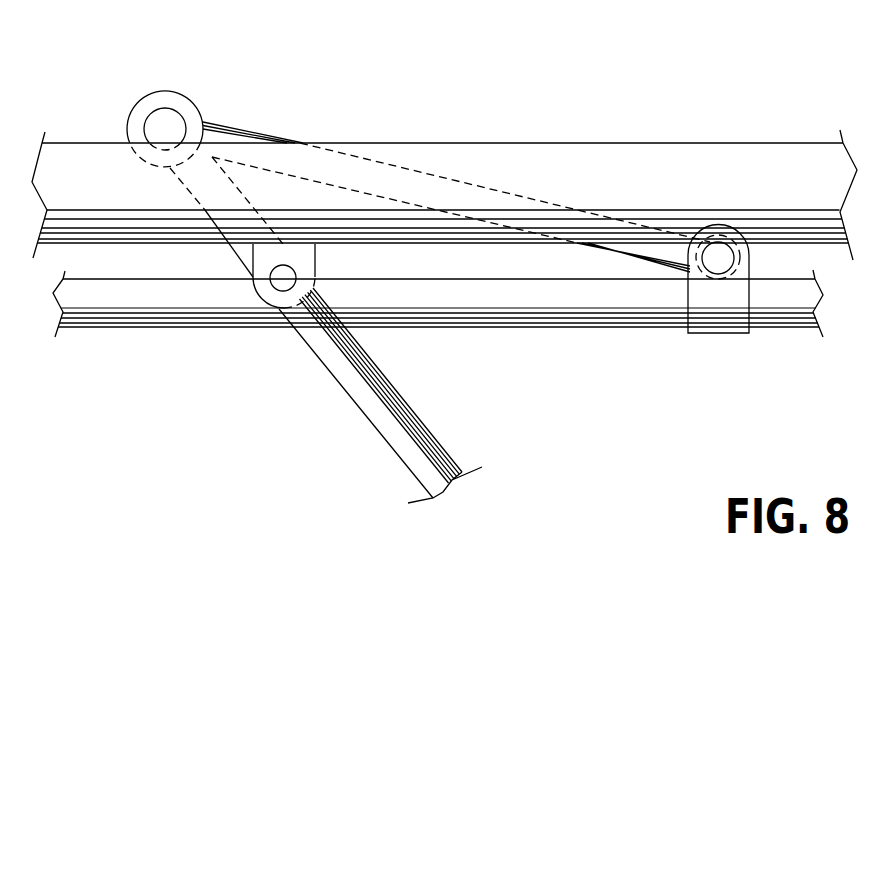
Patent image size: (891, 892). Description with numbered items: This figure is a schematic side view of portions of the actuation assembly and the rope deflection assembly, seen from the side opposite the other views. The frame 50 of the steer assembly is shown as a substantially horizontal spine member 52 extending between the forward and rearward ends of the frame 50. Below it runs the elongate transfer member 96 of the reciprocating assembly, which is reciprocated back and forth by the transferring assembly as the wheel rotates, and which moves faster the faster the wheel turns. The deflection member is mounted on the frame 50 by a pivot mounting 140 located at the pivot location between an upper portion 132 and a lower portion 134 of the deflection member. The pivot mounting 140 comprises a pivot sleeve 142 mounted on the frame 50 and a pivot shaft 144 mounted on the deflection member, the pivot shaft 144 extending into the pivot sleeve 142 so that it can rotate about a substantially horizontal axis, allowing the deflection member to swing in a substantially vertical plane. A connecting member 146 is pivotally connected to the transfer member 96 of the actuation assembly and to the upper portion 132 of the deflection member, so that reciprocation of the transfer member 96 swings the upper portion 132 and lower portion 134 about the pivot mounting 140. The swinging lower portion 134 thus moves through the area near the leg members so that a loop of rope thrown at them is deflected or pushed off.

The frame 50 is at (444, 240).
The spine member 52 is at (493, 155).
The transfer member 96 is at (535, 313).
The upper portion 132 is at (197, 180).
The lower portion 134 is at (405, 447).
The pivot mounting 140 is at (302, 302).
The pivot sleeve 142 is at (312, 268).
The pivot shaft 144 is at (282, 283).
The connecting member 146 is at (242, 127).